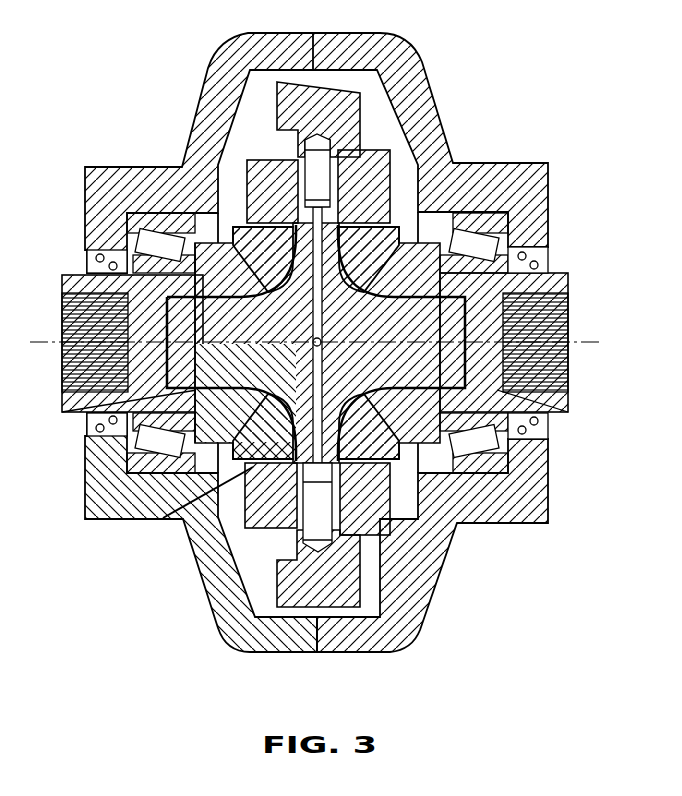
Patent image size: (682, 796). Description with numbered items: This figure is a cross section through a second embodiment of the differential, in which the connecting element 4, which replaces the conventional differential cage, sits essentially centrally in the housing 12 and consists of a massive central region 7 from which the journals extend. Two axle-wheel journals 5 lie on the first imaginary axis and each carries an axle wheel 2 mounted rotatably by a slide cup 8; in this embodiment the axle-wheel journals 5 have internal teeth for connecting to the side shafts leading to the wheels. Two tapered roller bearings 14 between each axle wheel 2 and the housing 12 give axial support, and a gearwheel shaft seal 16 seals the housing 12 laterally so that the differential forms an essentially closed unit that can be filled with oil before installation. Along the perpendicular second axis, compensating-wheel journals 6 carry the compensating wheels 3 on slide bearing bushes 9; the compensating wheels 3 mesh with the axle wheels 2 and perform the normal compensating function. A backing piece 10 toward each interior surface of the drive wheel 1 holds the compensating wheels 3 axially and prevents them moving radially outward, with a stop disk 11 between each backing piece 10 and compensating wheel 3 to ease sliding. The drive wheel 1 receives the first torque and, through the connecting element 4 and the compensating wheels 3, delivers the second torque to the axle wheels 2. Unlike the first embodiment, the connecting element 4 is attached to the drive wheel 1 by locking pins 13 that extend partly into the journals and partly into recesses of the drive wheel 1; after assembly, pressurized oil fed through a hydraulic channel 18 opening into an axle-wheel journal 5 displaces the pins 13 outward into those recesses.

The drive wheel 1 is at (293, 100).
The axle wheel 2 is at (490, 292).
The compensating wheel 3 is at (257, 233).
The connecting element 4 is at (360, 296).
The axle-wheel journal 5 is at (392, 360).
The compensating-wheel journal 6 is at (290, 505).
The central region 7 is at (130, 393).
The slide cup 8 is at (165, 308).
The slide bearing bush 9 is at (253, 467).
The backing piece 10 is at (380, 157).
The stop disk 11 is at (250, 450).
The housing 12 is at (227, 607).
The locking pin 13 is at (317, 160).
The tapered roller bearing 14 is at (173, 442).
The gearwheel shaft seal 16 is at (130, 250).
The hydraulic channel 18 is at (317, 213).